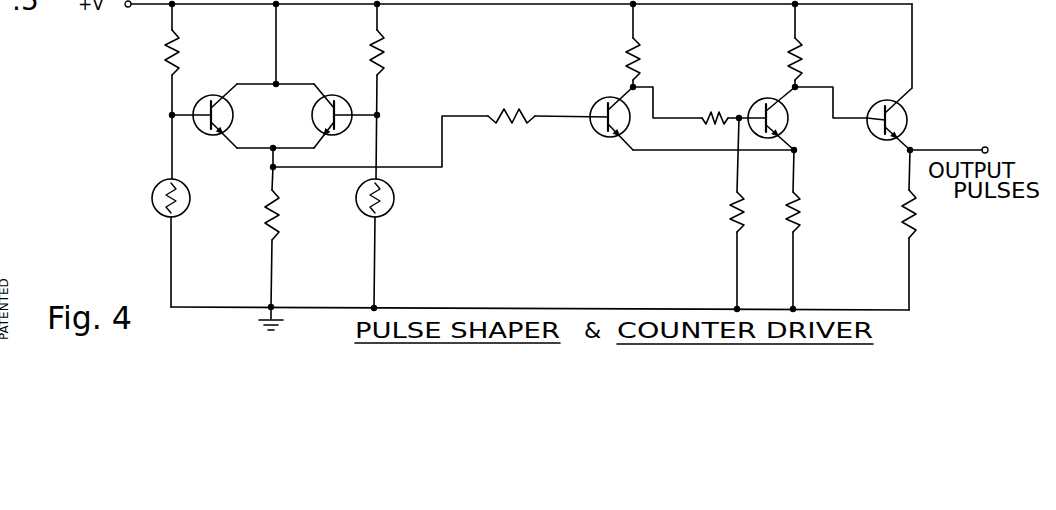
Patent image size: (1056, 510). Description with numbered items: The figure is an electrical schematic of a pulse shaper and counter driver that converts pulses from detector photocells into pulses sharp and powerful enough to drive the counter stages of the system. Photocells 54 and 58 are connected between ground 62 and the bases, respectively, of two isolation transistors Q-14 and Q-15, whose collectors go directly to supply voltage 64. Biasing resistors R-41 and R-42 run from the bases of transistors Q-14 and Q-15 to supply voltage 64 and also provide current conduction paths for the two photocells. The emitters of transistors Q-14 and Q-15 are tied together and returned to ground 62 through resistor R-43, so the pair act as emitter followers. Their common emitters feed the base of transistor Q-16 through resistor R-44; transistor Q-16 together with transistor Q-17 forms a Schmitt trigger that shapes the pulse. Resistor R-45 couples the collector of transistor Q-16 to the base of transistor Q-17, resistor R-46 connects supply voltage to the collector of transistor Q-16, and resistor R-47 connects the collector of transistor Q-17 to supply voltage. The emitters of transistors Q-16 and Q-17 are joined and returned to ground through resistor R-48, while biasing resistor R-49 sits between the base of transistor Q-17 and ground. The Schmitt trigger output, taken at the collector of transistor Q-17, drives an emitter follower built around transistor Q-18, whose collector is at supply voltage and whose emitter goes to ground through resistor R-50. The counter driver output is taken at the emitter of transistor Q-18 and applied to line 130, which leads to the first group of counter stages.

The supply voltage 64 is at (122, 17).
The photocell 54 is at (159, 185).
The photocell 58 is at (394, 198).
The ground 62 is at (264, 323).
The line 130 is at (982, 147).
The biasing resistor R-41 is at (192, 52).
The biasing resistor R-42 is at (396, 52).
The resistor R-43 is at (295, 237).
The resistor R-44 is at (511, 105).
The resistor R-45 is at (713, 109).
The resistor R-46 is at (654, 59).
The resistor R-47 is at (815, 59).
The resistor R-48 is at (813, 229).
The biasing resistor R-49 is at (715, 213).
The resistor R-50 is at (931, 230).
The transistor Q-14 is at (204, 113).
The transistor Q-15 is at (344, 113).
The transistor Q-16 is at (584, 112).
The transistor Q-17 is at (767, 114).
The transistor Q-18 is at (885, 115).